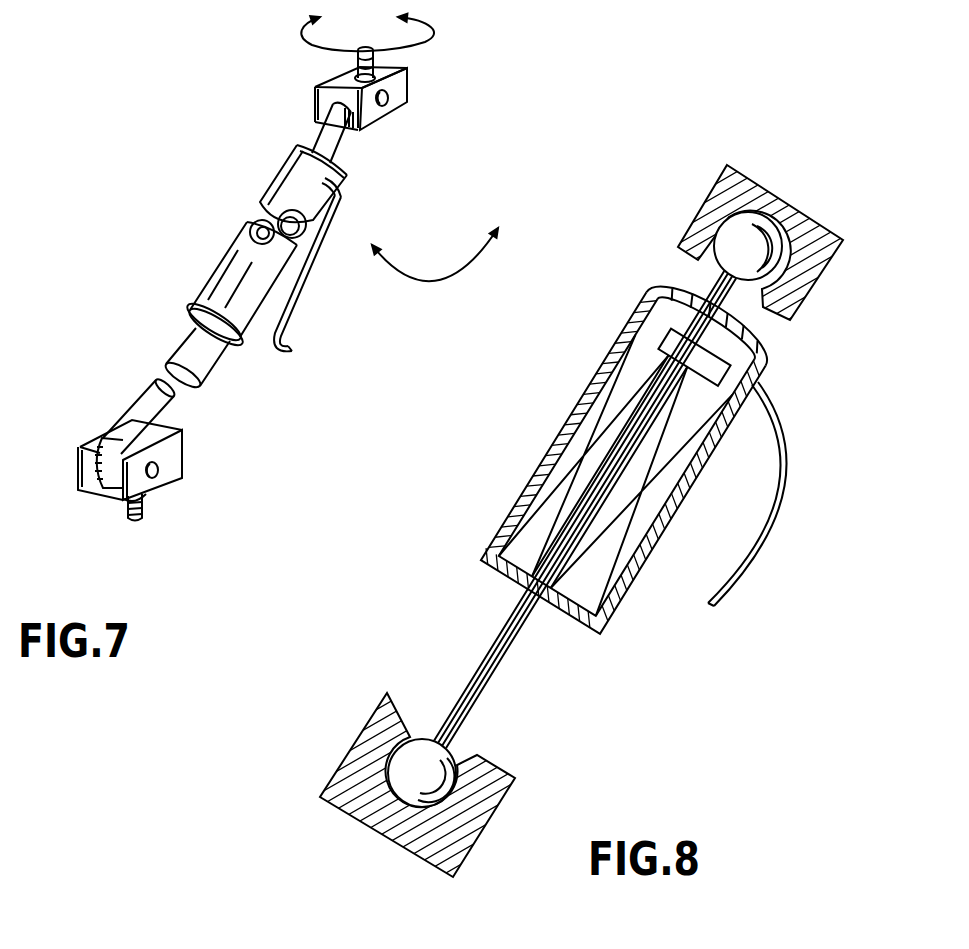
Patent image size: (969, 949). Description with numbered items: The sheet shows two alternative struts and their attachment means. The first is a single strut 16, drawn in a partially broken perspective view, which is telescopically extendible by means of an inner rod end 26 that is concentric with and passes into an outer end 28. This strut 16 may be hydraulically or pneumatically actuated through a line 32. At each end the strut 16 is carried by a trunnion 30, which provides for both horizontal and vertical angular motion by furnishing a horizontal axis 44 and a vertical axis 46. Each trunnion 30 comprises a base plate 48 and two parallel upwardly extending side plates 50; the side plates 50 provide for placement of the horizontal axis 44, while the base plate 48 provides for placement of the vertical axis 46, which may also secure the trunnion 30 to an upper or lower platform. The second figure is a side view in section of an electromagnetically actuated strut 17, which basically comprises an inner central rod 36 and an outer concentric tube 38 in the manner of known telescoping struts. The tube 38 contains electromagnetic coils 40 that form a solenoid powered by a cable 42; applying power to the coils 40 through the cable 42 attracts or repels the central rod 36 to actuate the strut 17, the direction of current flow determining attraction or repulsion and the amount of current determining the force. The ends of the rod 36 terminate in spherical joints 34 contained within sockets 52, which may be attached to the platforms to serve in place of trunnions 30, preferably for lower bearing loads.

In FIG. 7, the strut 16 is at (250, 289).
In FIG. 8, the electromagnetically actuated strut 17 is at (581, 504).
In FIG. 7, the inner rod end 26 is at (182, 338).
In FIG. 7, the outer end 28 is at (222, 270).
In FIG. 7, the trunnion 30 is at (362, 130).
In FIG. 7, the line 32 is at (307, 273).
In FIG. 8, the spherical joint 34 is at (764, 312).
In FIG. 8, the inner central rod 36 is at (502, 673).
In FIG. 8, the outer concentric tube 38 is at (605, 363).
In FIG. 8, the electromagnetic coils 40 is at (550, 443).
In FIG. 8, the cable 42 is at (752, 529).
In FIG. 7, the horizontal axis 44 is at (392, 104).
In FIG. 7, the vertical axis 46 is at (355, 73).
In FIG. 7, the base plate 48 is at (372, 68).
In FIG. 7, the side plates 50 is at (313, 110).
In FIG. 8, the socket 52 is at (768, 190).